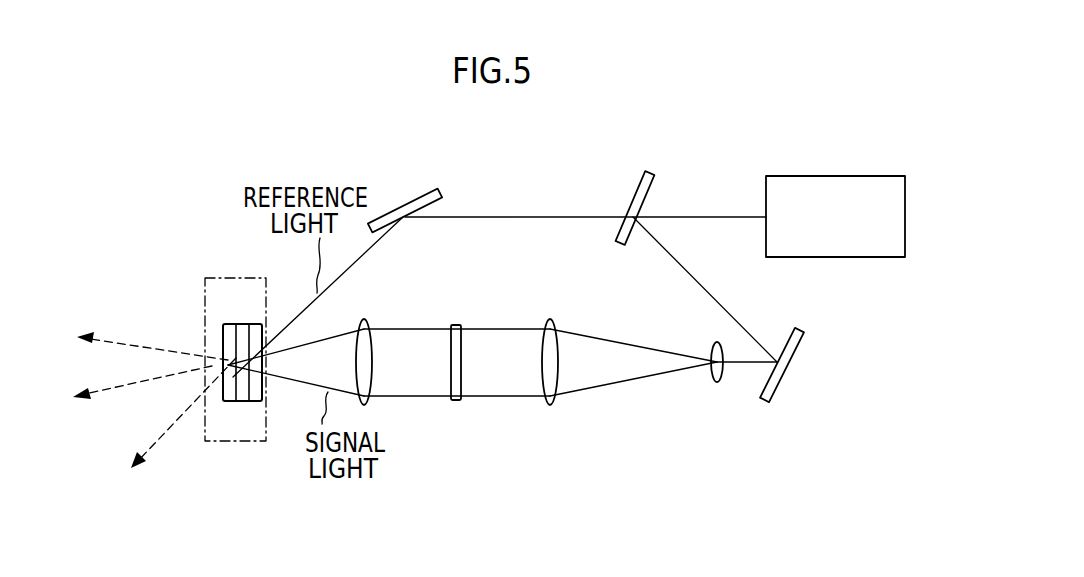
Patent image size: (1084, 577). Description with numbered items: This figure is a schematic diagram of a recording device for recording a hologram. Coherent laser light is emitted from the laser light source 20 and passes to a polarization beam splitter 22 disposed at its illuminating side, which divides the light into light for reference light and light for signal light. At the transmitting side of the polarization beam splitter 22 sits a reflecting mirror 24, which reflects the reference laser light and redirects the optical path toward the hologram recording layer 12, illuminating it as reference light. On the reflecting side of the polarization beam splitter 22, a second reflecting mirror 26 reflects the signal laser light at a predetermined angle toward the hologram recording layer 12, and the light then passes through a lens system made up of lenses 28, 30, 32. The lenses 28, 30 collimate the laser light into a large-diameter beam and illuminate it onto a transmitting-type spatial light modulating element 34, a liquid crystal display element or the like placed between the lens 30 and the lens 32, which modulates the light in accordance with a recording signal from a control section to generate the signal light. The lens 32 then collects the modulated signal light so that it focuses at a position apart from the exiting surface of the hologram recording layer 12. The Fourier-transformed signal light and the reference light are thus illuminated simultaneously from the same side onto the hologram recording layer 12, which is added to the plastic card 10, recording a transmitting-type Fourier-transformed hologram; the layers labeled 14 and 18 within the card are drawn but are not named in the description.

The plastic card 10 is at (232, 432).
The hologram recording layer 12 is at (243, 323).
The recording layer 14 is at (254, 331).
The substrate layer 18 is at (223, 337).
The laser light source 20 is at (813, 175).
The polarization beam splitter 22 is at (646, 172).
The reflecting mirror 24 is at (421, 190).
The reflecting mirror 26 is at (800, 348).
The lens 28 is at (716, 383).
The lens 30 is at (553, 319).
The lens 32 is at (365, 319).
The transmitting-type spatial light modulating element 34 is at (456, 325).